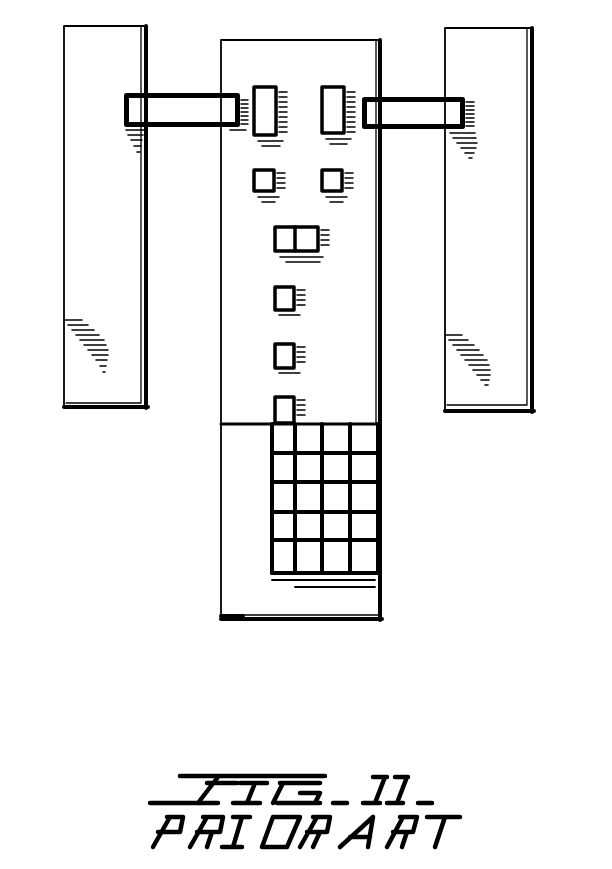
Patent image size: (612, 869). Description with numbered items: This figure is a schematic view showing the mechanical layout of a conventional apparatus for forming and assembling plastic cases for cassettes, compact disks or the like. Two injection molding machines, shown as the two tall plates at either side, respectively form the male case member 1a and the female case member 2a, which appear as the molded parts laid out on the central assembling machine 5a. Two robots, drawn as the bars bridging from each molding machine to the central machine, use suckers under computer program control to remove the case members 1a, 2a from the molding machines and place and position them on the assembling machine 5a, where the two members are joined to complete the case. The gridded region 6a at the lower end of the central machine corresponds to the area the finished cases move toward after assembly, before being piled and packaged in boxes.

The male case member 1a is at (347, 185).
The female case member 2a is at (252, 180).
The assembling machine 5a is at (381, 166).
The connector portion 6a is at (227, 524).